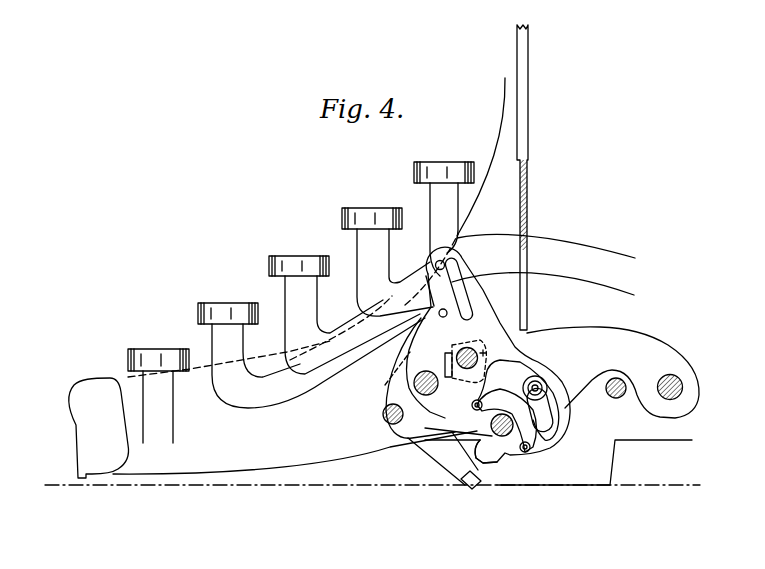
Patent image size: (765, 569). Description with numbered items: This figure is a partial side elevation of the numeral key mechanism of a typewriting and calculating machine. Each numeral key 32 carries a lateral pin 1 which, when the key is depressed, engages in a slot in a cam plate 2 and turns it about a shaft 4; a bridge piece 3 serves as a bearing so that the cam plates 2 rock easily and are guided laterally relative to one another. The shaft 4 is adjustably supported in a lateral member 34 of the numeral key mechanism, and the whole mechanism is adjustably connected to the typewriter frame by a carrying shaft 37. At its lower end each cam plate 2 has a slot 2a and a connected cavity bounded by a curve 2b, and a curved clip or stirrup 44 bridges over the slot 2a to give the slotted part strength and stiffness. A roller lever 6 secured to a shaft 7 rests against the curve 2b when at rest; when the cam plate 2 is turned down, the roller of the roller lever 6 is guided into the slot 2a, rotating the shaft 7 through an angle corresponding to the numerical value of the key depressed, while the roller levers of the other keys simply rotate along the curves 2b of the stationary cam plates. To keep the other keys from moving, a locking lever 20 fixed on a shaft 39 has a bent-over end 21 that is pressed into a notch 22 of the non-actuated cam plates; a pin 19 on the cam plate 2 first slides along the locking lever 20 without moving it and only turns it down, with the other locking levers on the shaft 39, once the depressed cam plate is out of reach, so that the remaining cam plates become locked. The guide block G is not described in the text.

The guide block G is at (92, 400).
The numeral key 32 is at (450, 170).
The lateral pin 1 is at (446, 263).
The cam plate 2 is at (482, 300).
The pin 19 is at (433, 305).
The shaft 4 is at (471, 350).
The bridge piece 3 is at (486, 353).
The curve 2b is at (537, 375).
The roller lever 6 is at (563, 404).
The lateral member 34 is at (635, 353).
The locking lever 20 is at (393, 387).
The shaft 39 is at (386, 418).
The carrying shaft 37 is at (421, 396).
The slot 2a is at (480, 426).
The bent-over end 21 is at (467, 481).
The notch 22 is at (480, 460).
The shaft 7 is at (512, 437).
The curved clip or stirrup 44 is at (525, 412).